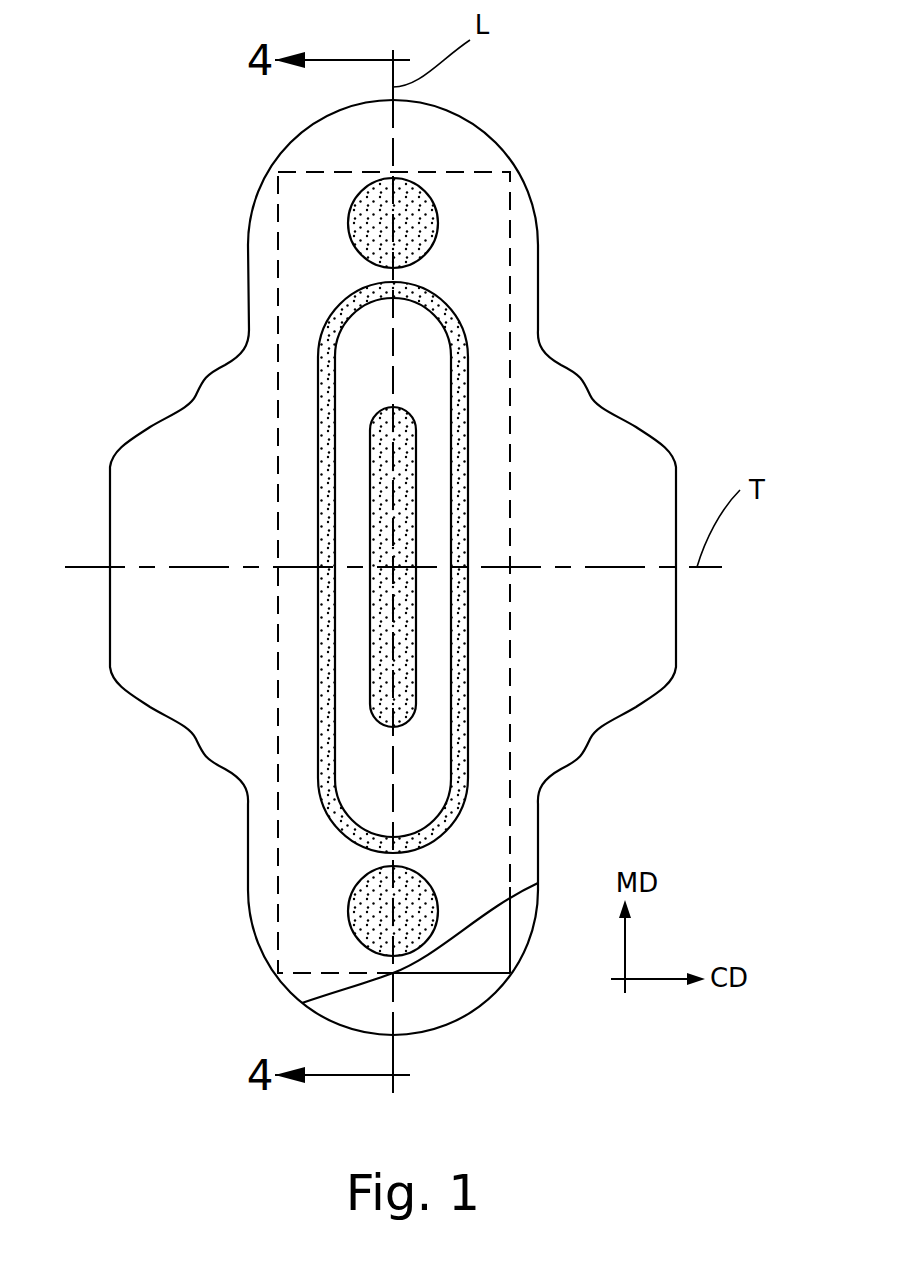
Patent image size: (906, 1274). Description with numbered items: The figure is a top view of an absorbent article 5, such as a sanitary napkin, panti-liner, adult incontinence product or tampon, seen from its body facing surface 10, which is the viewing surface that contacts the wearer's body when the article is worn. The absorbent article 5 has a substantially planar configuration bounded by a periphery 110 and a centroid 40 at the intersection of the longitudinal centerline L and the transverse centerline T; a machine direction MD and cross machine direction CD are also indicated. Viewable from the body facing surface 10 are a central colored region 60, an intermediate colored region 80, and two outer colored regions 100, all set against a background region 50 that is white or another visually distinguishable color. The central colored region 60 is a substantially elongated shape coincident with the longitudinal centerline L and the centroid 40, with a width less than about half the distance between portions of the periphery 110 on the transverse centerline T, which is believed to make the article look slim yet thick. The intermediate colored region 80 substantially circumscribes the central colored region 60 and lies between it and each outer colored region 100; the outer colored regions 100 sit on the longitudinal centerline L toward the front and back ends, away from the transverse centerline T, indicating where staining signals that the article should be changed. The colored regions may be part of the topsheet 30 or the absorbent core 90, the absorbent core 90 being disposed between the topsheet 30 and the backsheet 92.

The absorbent article 5 is at (393, 525).
The body facing surface 10 is at (243, 567).
The topsheet 30 is at (350, 675).
The centroid 40 is at (395, 572).
The background region 50 is at (488, 369).
The central colored region 60 is at (408, 472).
The intermediate colored region 80 is at (452, 326).
The absorbent core 90 is at (457, 966).
The backsheet 92 is at (407, 1015).
The outer colored region 100 is at (417, 231).
The periphery 110 is at (538, 243).